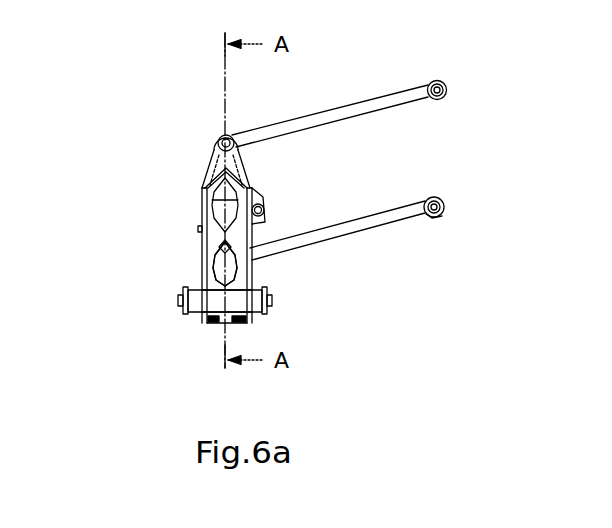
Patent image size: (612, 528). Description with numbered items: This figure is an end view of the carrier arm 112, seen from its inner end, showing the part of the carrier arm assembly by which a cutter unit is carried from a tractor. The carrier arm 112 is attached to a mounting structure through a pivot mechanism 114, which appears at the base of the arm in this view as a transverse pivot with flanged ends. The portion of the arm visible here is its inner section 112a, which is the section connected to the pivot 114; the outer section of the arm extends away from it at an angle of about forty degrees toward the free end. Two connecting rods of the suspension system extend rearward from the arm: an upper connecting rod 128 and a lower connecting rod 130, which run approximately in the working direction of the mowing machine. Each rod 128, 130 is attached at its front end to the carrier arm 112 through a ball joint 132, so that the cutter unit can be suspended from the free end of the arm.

The carrier arm 112 is at (160, 180).
The inner section 112a is at (240, 272).
The pivot mechanism 114 is at (180, 300).
The upper connecting rods 128 is at (403, 98).
The lower connecting rods 130 is at (402, 217).
The ball joints 132 is at (441, 78).